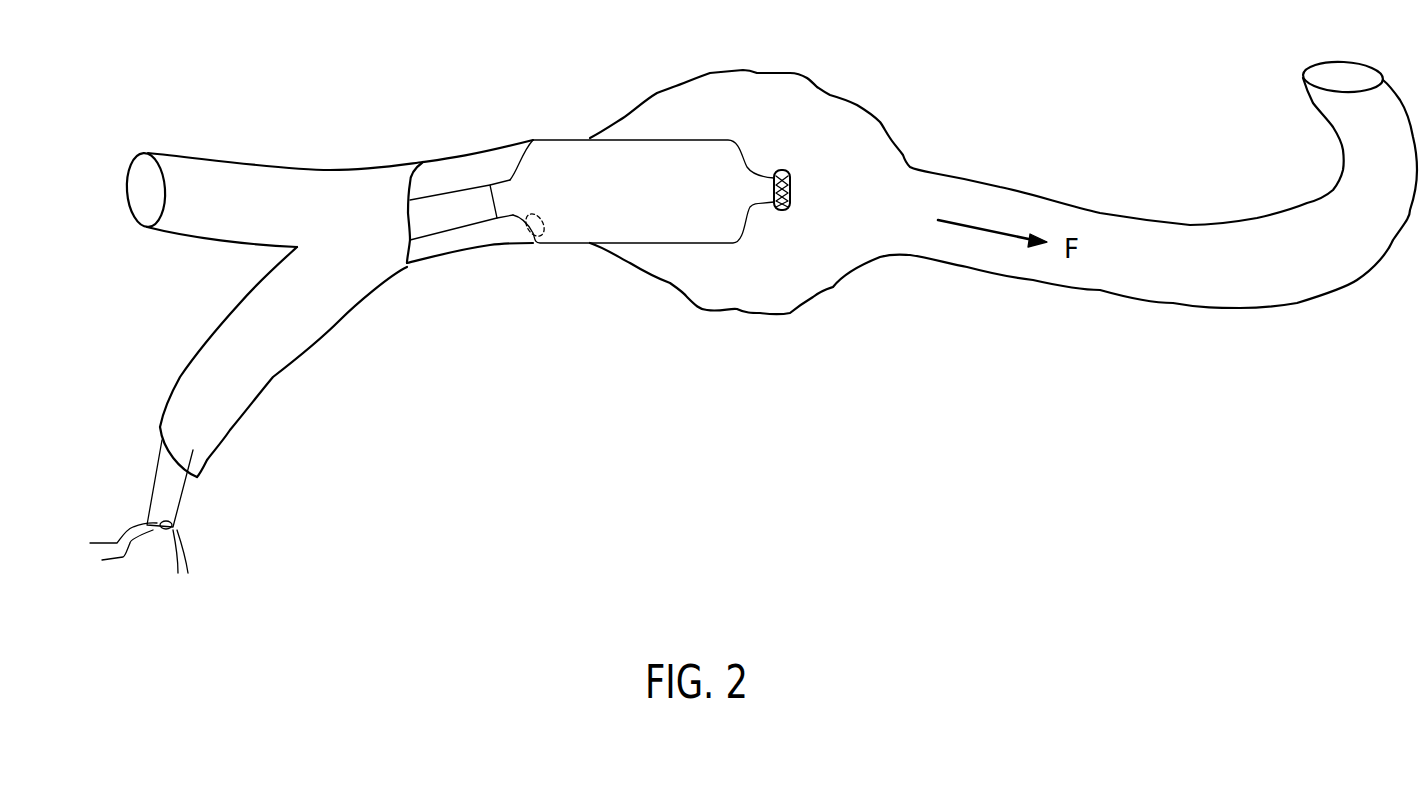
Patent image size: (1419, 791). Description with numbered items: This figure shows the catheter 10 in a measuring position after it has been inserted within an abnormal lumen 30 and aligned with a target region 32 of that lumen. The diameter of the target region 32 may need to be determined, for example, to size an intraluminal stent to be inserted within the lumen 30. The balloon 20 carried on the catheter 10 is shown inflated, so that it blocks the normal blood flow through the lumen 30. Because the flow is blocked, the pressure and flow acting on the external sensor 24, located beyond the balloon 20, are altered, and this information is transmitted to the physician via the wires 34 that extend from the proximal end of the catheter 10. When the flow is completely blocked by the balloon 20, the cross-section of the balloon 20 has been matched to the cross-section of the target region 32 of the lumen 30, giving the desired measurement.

The catheter 10 is at (136, 465).
The balloon 20 is at (700, 138).
The external sensor 24 is at (790, 190).
The abnormal lumen 30 is at (770, 268).
The target region 32 is at (612, 120).
The wires 34 is at (123, 563).